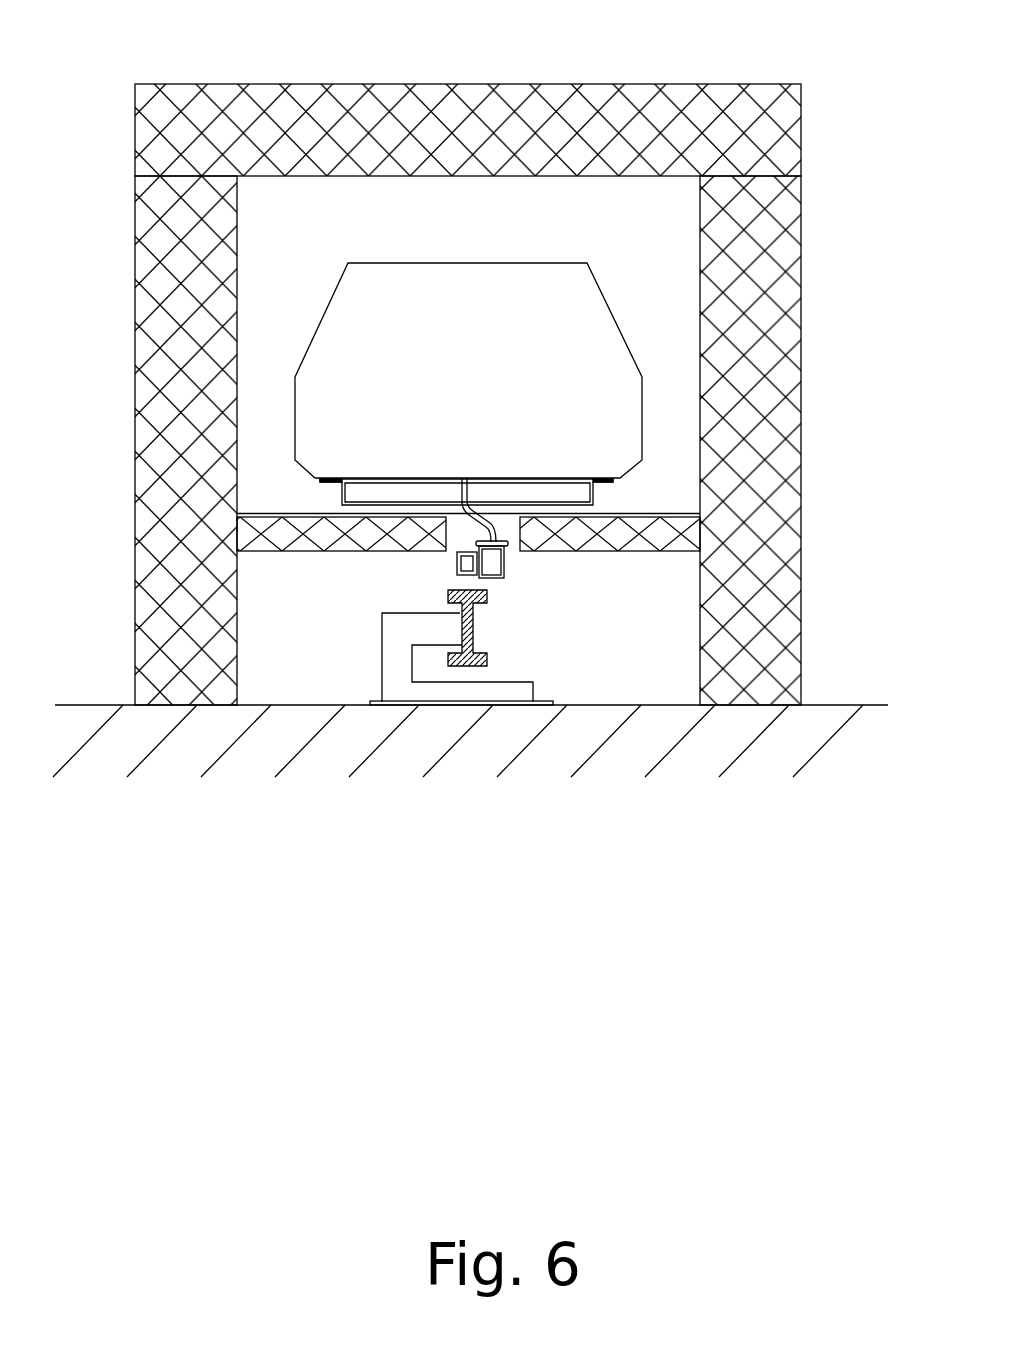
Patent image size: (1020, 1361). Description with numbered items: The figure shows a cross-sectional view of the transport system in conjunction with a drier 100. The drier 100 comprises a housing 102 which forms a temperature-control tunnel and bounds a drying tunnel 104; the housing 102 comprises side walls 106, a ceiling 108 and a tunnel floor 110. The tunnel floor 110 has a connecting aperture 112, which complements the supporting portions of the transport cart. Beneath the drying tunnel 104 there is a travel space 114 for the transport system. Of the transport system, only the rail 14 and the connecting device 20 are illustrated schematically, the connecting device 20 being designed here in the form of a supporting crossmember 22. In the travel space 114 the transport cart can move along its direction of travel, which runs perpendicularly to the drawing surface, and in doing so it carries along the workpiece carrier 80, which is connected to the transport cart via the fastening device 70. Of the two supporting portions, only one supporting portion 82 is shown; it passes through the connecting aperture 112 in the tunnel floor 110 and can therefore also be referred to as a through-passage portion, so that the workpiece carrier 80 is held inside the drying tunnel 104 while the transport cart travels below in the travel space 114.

The drier 100 is at (461, 364).
The housing 102 is at (763, 84).
The drying tunnel 104 is at (680, 250).
The side walls 106 is at (135, 280).
The ceiling 108 is at (290, 84).
The tunnel floor 110 is at (272, 513).
The connecting aperture 112 is at (470, 480).
The travel space 114 is at (687, 642).
The workpiece carrier 80 is at (488, 477).
The supporting portion 82 is at (452, 485).
The fastening device 70 is at (506, 565).
The supporting crossmember 22 is at (457, 563).
The connecting device 20 is at (479, 579).
The rail 14 is at (490, 655).